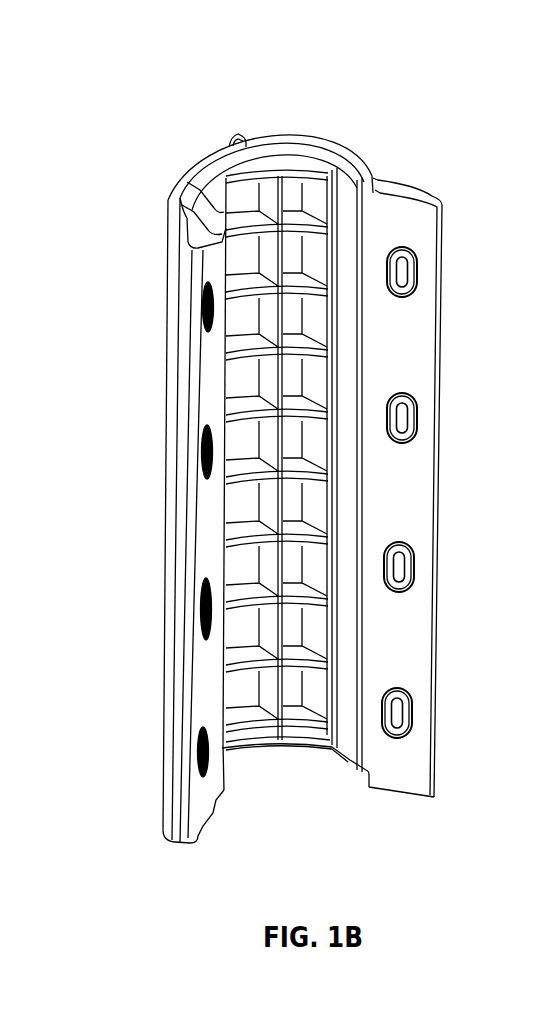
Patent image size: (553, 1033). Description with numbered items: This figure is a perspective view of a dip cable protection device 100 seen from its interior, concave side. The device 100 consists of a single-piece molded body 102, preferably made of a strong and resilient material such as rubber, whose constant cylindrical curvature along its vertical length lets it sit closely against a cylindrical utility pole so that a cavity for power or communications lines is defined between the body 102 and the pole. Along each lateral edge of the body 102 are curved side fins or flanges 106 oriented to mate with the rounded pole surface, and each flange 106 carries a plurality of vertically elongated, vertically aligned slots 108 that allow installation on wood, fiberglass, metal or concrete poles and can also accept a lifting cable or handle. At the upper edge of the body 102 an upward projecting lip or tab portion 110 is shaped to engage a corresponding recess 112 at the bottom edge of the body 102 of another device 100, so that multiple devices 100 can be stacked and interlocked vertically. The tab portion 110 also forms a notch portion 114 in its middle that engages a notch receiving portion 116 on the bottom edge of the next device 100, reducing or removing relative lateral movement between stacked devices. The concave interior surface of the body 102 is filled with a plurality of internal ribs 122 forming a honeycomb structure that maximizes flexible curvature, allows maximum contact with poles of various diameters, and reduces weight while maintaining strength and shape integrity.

The dip cable protection device 100 is at (387, 96).
The molded body 102 is at (168, 247).
The side flanges 106 is at (208, 828).
The slots 108 is at (205, 427).
The tab portion 110 is at (198, 148).
The recess 112 is at (320, 758).
The notch portion 114 is at (233, 132).
The notch receiving portion 116 is at (240, 760).
The internal ribs 122 is at (318, 264).